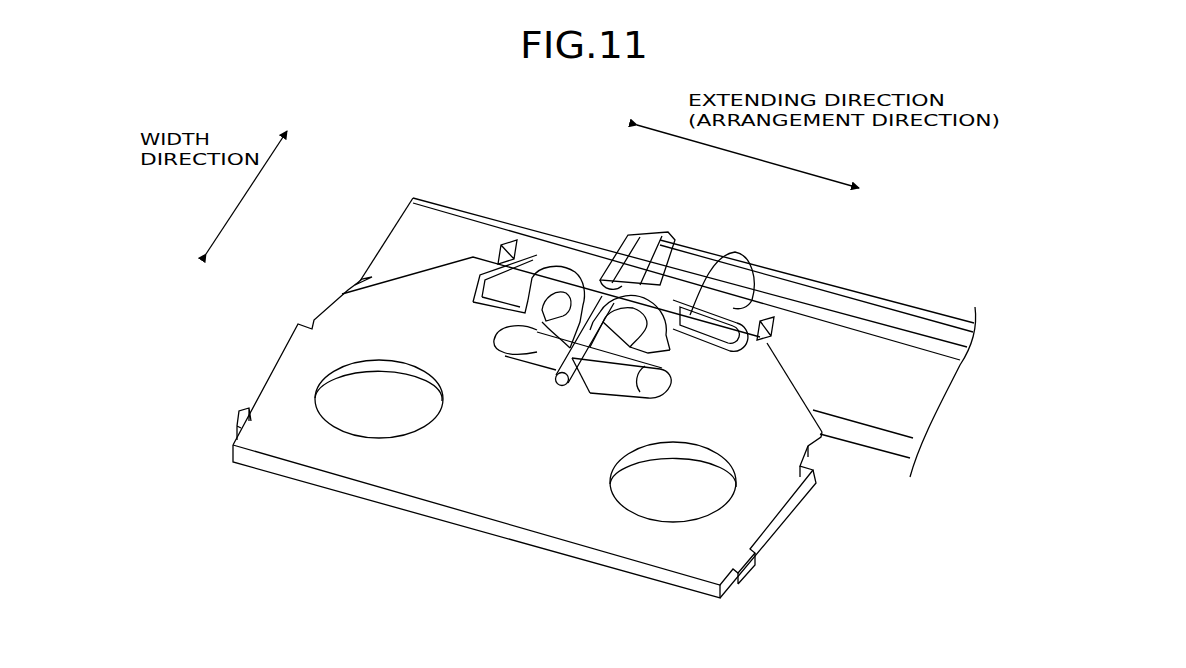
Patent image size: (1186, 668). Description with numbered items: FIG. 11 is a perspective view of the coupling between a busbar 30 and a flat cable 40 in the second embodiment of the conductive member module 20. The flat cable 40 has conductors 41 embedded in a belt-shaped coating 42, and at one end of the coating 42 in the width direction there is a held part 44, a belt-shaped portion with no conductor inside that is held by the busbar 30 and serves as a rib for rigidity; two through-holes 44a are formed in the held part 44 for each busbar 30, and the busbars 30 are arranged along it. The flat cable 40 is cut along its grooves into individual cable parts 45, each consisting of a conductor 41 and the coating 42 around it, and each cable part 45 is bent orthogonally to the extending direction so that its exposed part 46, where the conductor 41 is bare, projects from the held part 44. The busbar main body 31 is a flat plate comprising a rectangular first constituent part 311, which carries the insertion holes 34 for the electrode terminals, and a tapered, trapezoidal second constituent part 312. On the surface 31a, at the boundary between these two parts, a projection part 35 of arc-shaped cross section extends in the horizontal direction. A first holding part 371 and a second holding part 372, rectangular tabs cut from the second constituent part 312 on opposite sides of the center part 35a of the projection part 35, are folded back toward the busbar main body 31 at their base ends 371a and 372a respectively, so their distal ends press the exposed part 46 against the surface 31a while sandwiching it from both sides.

The conductive member module 20 is at (441, 167).
The busbar 30 is at (449, 253).
The busbar main body 31 is at (268, 357).
The first constituent part 311 is at (246, 393).
The second constituent part 312 is at (372, 277).
The surface 31a is at (283, 427).
The insertion hole 34 is at (353, 434).
The projection part 35 is at (487, 350).
The center part 35a is at (598, 365).
The first holding part 371 is at (664, 293).
The end 371a is at (660, 383).
The second holding part 372 is at (574, 270).
The end 372a is at (497, 338).
The flat cable 40 is at (908, 300).
The conductor 41 is at (552, 395).
The coating 42 is at (848, 283).
The held part 44 is at (850, 442).
The through-hole 44a is at (498, 244).
The cable part 45 is at (621, 237).
The exposed part 46 is at (582, 387).